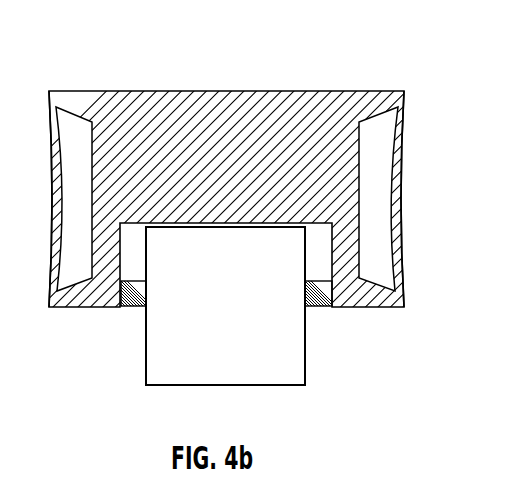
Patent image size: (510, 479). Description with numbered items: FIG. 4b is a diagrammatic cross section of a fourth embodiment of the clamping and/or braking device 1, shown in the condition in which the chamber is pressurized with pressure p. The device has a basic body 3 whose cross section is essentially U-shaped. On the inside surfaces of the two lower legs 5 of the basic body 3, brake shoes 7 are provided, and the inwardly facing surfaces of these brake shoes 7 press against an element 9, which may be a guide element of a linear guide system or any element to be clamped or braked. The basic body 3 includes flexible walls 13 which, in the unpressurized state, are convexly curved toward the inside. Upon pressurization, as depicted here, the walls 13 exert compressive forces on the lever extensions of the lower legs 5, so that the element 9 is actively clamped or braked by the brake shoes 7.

The clamping and/or braking device 1 is at (255, 207).
The basic body 3 is at (238, 91).
The lower legs 5 is at (100, 249).
The brake shoes 7 is at (130, 307).
The element 9 is at (220, 308).
The flexible walls 13 is at (52, 179).